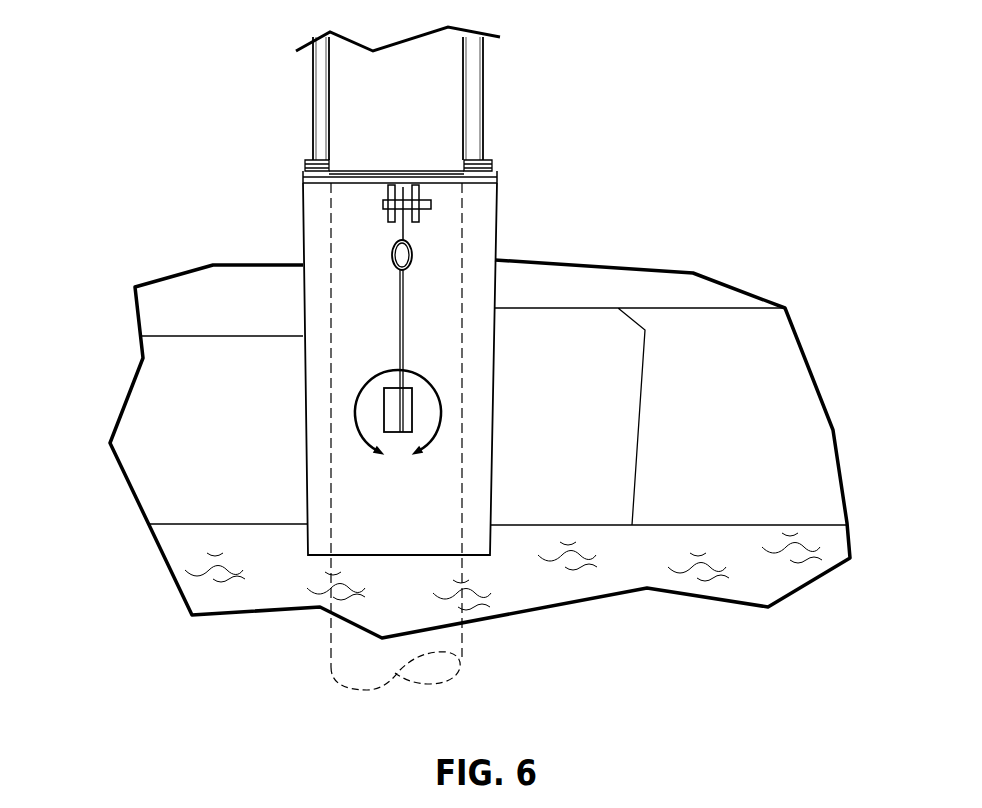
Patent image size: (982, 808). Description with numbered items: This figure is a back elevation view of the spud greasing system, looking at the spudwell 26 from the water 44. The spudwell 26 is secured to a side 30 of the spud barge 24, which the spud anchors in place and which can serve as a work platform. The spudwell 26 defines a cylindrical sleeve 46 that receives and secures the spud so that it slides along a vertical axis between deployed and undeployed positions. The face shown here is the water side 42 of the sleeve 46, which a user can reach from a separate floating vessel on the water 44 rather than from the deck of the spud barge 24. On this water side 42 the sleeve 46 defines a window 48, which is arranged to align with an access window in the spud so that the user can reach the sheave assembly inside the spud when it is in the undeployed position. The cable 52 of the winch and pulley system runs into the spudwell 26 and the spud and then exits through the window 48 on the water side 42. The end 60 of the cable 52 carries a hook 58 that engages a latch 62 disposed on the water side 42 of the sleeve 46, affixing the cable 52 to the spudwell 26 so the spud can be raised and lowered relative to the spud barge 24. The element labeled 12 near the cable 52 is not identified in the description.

The weight rotation 12 is at (398, 435).
The spud barge 24 is at (177, 361).
The spudwell 26 is at (325, 260).
The side 30 is at (537, 360).
The water side 42 is at (430, 325).
The water 44 is at (193, 570).
The sleeve 46 is at (345, 243).
The window 48 is at (388, 403).
The cable 52 is at (400, 320).
The hook 58 is at (398, 244).
The end 60 is at (406, 212).
The latch 62 is at (412, 258).